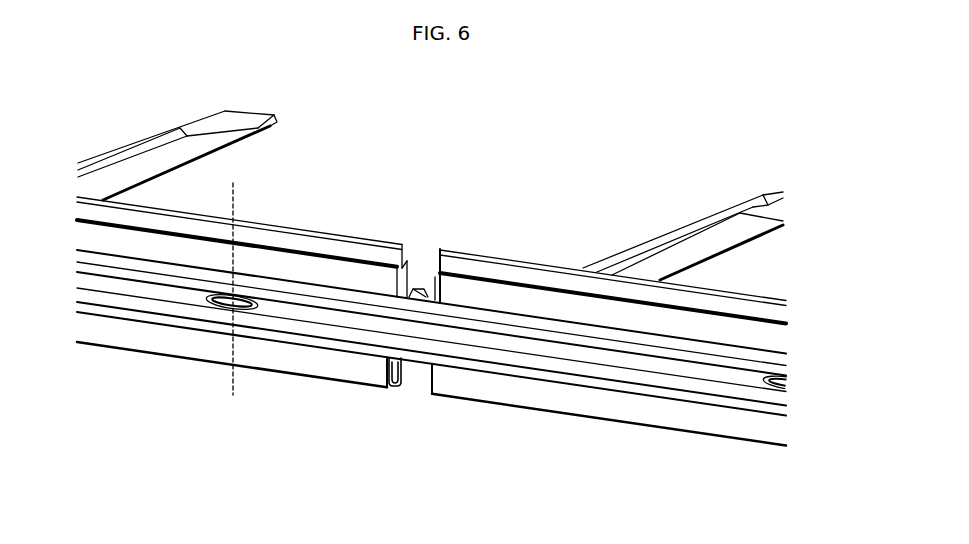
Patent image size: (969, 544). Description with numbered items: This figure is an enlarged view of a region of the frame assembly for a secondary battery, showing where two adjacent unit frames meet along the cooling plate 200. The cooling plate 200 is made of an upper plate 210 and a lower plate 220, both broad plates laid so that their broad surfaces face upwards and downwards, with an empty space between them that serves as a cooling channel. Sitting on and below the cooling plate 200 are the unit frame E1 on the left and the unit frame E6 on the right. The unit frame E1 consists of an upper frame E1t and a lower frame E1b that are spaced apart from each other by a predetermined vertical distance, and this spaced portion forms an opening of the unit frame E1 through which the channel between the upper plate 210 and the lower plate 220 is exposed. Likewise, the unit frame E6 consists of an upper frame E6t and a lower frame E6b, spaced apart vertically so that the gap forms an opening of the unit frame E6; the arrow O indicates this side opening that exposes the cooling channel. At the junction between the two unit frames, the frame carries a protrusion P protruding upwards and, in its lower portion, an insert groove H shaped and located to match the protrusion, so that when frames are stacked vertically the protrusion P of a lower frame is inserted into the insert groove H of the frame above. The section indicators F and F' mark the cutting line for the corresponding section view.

The cooling plate 200 is at (445, 319).
The upper plate 210 is at (605, 193).
The lower plate 220 is at (763, 398).
The unit frame E1 is at (239, 332).
The upper frame E1t is at (333, 272).
The lower frame E1b is at (343, 363).
The unit frame E6 is at (609, 377).
The upper frame E6t is at (592, 312).
The lower frame E6b is at (608, 405).
The insert groove H is at (405, 386).
The protrusion P is at (377, 242).
The opening O is at (647, 366).
The section line F is at (241, 288).
The section line F' is at (239, 380).